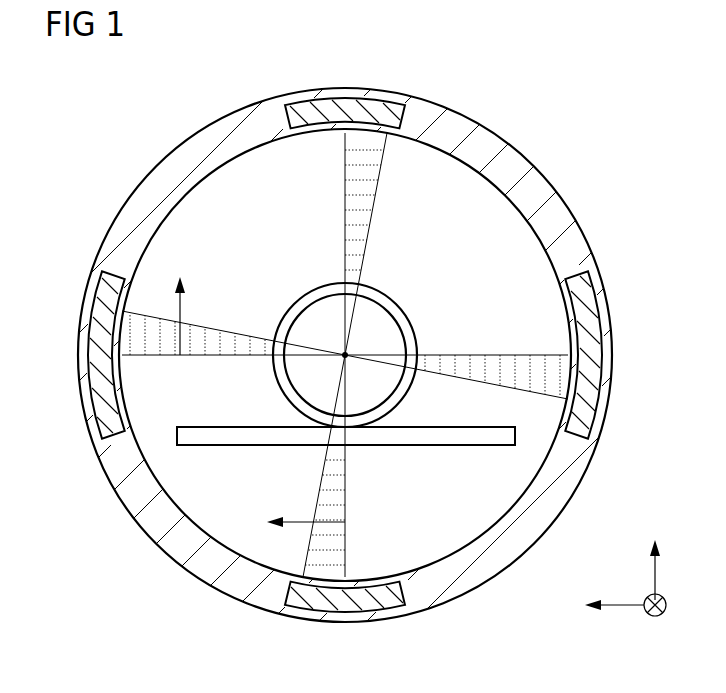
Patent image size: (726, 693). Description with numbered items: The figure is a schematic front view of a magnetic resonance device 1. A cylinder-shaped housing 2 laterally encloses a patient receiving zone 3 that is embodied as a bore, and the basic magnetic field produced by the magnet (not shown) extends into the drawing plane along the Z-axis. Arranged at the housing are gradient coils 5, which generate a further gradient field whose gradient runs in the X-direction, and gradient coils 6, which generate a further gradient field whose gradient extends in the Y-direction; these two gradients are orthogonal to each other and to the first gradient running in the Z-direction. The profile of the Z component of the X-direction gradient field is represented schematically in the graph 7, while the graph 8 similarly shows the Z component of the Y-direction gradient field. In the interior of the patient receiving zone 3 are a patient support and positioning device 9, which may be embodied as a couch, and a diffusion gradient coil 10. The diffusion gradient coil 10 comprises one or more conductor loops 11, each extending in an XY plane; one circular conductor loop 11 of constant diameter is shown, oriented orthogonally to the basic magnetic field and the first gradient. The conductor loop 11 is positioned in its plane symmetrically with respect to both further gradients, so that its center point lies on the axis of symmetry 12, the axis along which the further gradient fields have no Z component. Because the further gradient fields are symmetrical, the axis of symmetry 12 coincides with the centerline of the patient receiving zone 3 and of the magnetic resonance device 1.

The magnetic resonance device 1 is at (530, 90).
The housing 2 is at (577, 246).
The patient receiving zone 3 is at (210, 215).
The gradient coils 5 is at (98, 357).
The gradient coils 6 is at (345, 110).
The graph 7 is at (163, 348).
The graph 8 is at (378, 160).
The patient support and positioning device 9 is at (480, 437).
The diffusion gradient coil 10 is at (322, 298).
The conductor loop 11 is at (293, 320).
The axis of symmetry 12 is at (347, 352).